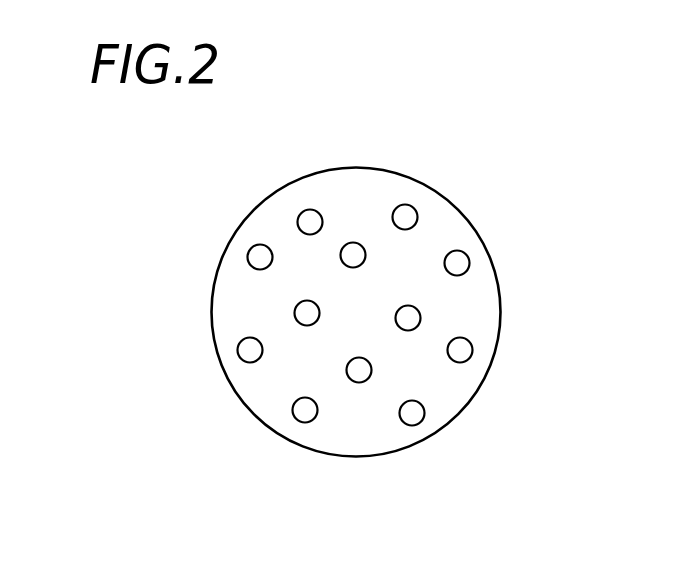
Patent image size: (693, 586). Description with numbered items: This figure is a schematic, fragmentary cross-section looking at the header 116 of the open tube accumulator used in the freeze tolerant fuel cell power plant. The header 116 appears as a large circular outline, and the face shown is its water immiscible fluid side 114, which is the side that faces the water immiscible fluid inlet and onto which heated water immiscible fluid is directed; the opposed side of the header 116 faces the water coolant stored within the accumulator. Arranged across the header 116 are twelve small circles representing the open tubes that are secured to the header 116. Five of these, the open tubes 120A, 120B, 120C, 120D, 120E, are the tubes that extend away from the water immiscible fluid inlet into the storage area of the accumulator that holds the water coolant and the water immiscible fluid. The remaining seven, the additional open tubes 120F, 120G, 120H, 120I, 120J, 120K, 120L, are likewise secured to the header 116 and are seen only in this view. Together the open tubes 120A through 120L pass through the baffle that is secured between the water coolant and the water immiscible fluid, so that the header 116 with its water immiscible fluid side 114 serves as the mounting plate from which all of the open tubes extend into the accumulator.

The water immiscible fluid side 114 is at (343, 182).
The header 116 is at (477, 220).
The open tube 120A is at (250, 350).
The open tube 120B is at (305, 410).
The open tube 120C is at (359, 370).
The open tube 120D is at (412, 413).
The open tube 120E is at (460, 350).
The open tube 120F is at (408, 318).
The open tube 120G is at (457, 263).
The open tube 120H is at (405, 217).
The open tube 120I is at (353, 255).
The open tube 120J is at (310, 222).
The open tube 120K is at (260, 257).
The open tube 120L is at (307, 313).